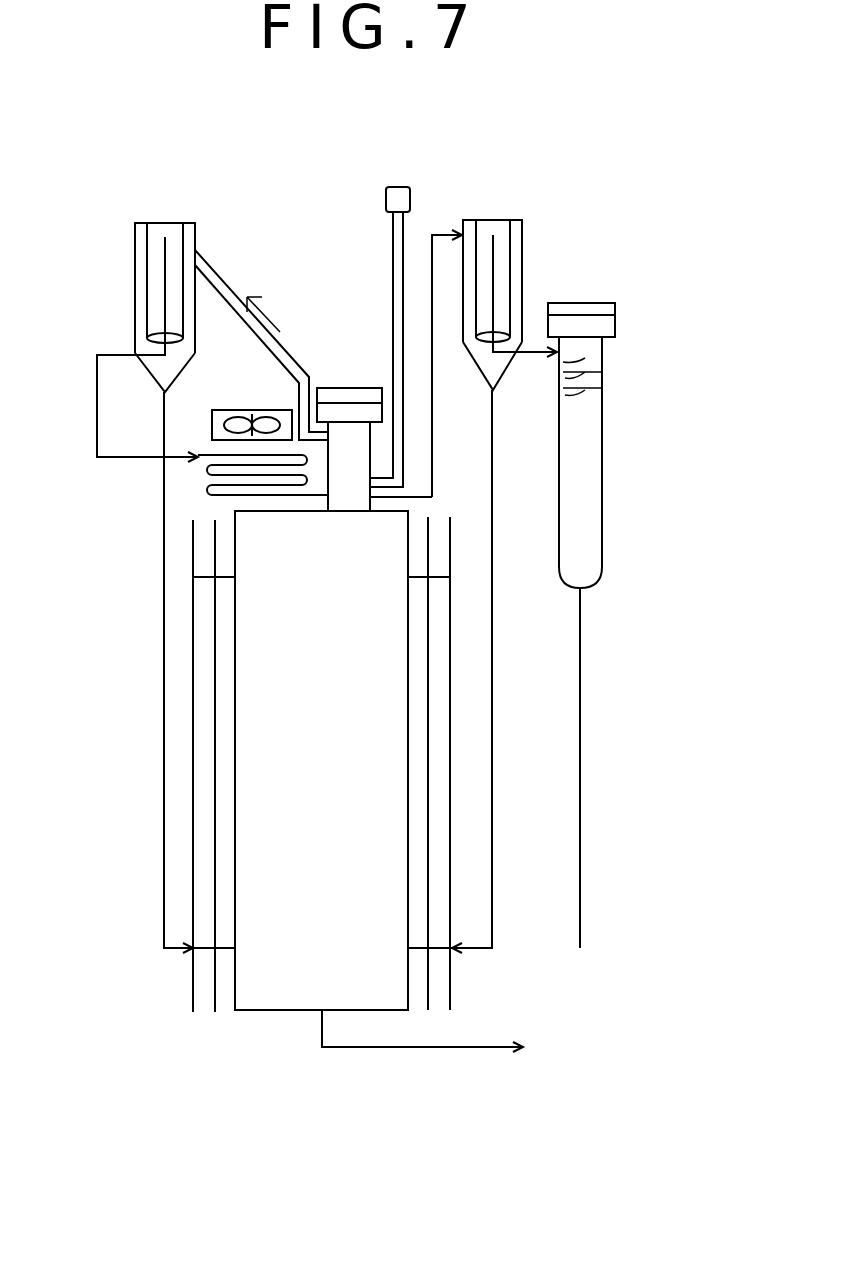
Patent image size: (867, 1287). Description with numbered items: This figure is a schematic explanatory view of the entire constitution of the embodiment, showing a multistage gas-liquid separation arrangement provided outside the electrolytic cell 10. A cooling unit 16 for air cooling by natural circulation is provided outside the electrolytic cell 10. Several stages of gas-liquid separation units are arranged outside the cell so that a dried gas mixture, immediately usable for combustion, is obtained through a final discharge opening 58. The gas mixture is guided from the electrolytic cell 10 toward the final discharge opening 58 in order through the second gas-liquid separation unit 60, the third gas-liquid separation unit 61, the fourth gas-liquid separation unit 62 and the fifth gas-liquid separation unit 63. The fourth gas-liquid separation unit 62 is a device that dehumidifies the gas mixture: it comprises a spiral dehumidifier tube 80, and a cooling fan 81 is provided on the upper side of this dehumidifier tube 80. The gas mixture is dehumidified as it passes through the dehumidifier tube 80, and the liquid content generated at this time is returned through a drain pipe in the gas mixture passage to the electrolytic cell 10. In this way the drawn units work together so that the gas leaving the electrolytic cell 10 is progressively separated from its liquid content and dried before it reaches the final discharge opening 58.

The electrolytic cell 10 is at (302, 898).
The cooling unit 16 is at (193, 803).
The final discharge opening 58 is at (602, 405).
The second gas-liquid separation unit 60 is at (350, 383).
The third gas-liquid separation unit 61 is at (170, 218).
The fourth gas-liquid separation unit 62 is at (198, 477).
The fifth gas-liquid separation unit 63 is at (498, 218).
The dehumidifier tube 80 is at (284, 497).
The cooling fan 81 is at (232, 410).